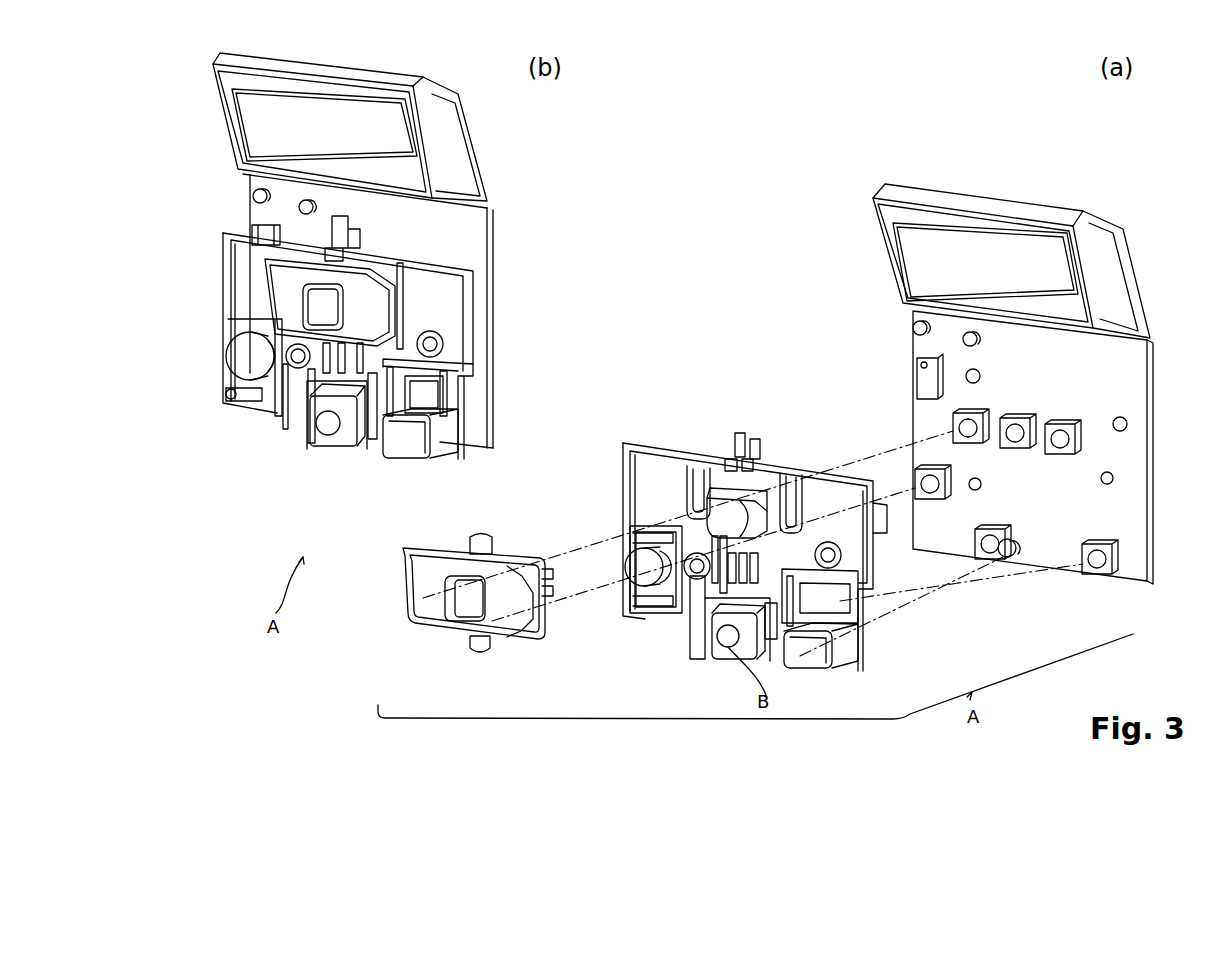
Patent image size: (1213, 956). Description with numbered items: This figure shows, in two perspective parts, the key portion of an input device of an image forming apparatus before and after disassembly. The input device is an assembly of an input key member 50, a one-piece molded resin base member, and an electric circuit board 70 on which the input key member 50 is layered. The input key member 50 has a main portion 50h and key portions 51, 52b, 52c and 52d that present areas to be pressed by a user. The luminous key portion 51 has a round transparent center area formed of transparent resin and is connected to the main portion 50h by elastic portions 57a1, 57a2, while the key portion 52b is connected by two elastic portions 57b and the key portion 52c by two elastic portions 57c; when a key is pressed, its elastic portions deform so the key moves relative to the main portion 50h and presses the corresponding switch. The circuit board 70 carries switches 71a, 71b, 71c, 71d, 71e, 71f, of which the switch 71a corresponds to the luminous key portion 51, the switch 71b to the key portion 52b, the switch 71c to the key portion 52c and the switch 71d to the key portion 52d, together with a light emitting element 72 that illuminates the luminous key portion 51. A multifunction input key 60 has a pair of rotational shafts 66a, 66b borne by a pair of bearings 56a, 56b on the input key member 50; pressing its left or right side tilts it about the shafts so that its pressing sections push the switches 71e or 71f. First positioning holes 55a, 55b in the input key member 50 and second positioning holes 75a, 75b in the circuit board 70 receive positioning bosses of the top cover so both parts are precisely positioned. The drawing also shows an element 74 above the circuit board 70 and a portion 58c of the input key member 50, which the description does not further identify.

The input key member 50 is at (703, 427).
The main portion 50h is at (623, 443).
The luminous key portion 51 is at (313, 445).
The key portion 52b is at (230, 358).
The key portion 52c is at (407, 457).
The key portion 52d is at (317, 302).
The first positioning hole 55a is at (297, 367).
The first positioning hole 55b is at (845, 555).
The bearing 56a is at (730, 458).
The bearing 56b is at (712, 628).
The elastic portion 57a1 is at (297, 418).
The elastic portion 57a2 is at (372, 440).
The elastic portion 57b is at (250, 330).
The elastic portion 57c is at (444, 345).
The notch 58c is at (457, 387).
The multifunction input key 60 is at (262, 277).
The rotational shaft 66a is at (487, 540).
The rotational shaft 66b is at (463, 652).
The electric circuit board 70 is at (460, 240).
The switch 71a is at (983, 560).
The switch 71b is at (915, 482).
The switch 71c is at (1093, 576).
The switch 71d is at (1009, 420).
The switch 71e is at (953, 428).
The switch 71f is at (1058, 430).
The light emitting element 72 is at (1003, 560).
The lid 74 is at (258, 118).
The second positioning hole 75a is at (974, 489).
The second positioning hole 75b is at (1103, 480).